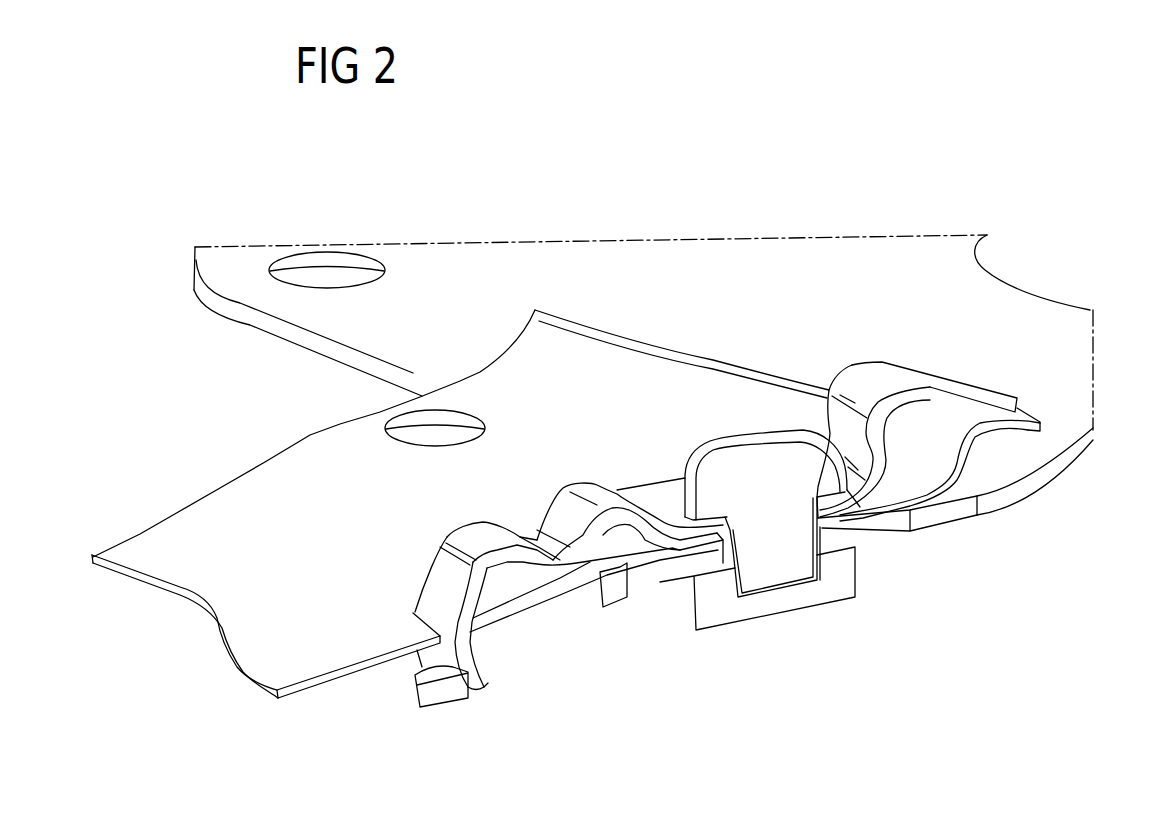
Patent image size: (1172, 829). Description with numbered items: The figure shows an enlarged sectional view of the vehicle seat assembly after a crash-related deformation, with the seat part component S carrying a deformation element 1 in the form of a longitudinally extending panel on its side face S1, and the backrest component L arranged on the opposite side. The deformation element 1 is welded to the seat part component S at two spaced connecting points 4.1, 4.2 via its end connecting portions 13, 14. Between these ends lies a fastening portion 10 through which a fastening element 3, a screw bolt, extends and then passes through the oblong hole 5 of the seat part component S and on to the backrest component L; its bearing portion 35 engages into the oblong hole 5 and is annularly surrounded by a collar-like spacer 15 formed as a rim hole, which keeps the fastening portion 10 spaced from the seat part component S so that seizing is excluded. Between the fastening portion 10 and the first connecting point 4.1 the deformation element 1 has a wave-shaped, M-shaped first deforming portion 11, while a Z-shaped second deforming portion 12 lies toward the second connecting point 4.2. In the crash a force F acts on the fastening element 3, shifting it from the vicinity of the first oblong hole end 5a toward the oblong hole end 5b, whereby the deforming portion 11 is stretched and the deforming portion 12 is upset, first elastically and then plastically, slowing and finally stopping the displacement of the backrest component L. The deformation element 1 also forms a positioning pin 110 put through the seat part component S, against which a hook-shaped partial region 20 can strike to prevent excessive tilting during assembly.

The deformation element 1 is at (778, 511).
The fastening element 3 is at (814, 540).
The first connecting point 4.1 is at (485, 625).
The second connecting point 4.2 is at (1030, 426).
The oblong hole 5 is at (680, 547).
The first oblong hole end 5a is at (720, 540).
The oblong hole end 5b is at (843, 520).
The fastening portion 10 is at (728, 543).
The first deforming portion 11 is at (537, 537).
The second deforming portion 12 is at (877, 443).
The first connecting portion 13 is at (425, 617).
The second connecting portion 14 is at (967, 383).
The spacer 15 is at (827, 530).
The hook-shaped partial region 20 is at (436, 692).
The bearing portion 35 is at (773, 540).
The positioning pin 110 is at (483, 690).
The backrest component L is at (592, 478).
The seat part component S is at (300, 689).
The side face S1 is at (376, 640).
The force F is at (855, 658).